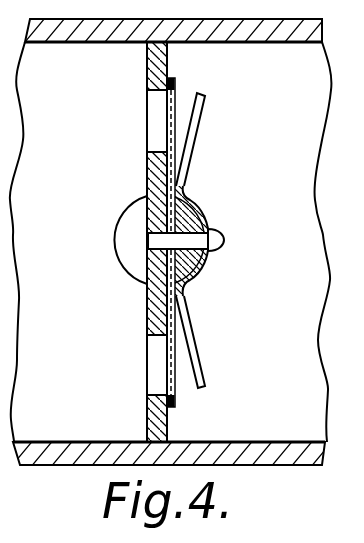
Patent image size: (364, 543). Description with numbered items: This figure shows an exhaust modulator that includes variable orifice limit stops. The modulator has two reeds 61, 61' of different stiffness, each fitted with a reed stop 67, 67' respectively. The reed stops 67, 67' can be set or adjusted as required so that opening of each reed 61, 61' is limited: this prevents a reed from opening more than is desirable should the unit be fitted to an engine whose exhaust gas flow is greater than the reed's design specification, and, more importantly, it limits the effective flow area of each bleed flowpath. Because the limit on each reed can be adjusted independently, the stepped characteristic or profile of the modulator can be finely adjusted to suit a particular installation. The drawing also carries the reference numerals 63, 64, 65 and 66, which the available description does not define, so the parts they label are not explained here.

The reed 61 is at (219, 236).
The reed 61' is at (224, 396).
The ball 63 is at (137, 252).
The lower wall block 64 is at (175, 428).
The pin 65 is at (218, 246).
The wall 66 is at (155, 100).
The reed stop 67 is at (227, 194).
The reed stop 67' is at (217, 342).